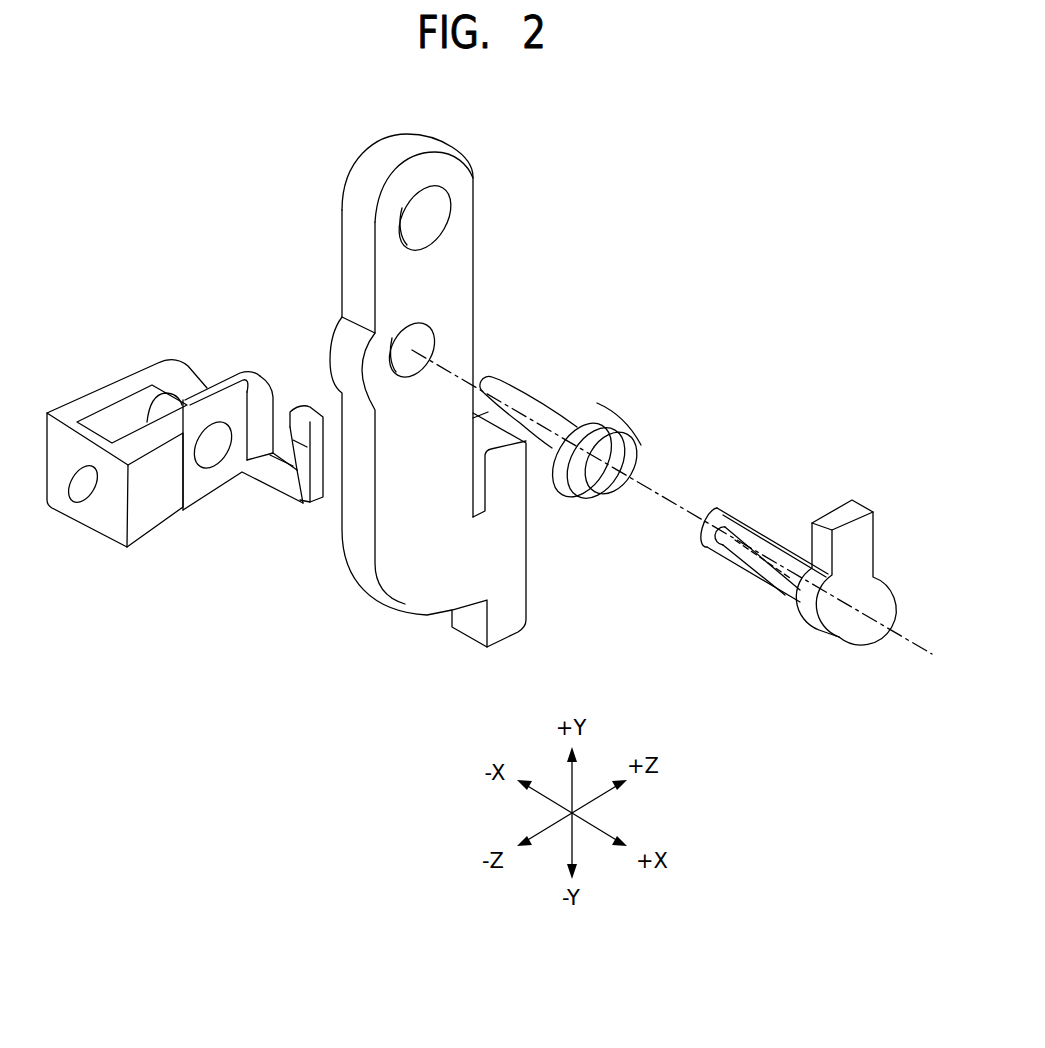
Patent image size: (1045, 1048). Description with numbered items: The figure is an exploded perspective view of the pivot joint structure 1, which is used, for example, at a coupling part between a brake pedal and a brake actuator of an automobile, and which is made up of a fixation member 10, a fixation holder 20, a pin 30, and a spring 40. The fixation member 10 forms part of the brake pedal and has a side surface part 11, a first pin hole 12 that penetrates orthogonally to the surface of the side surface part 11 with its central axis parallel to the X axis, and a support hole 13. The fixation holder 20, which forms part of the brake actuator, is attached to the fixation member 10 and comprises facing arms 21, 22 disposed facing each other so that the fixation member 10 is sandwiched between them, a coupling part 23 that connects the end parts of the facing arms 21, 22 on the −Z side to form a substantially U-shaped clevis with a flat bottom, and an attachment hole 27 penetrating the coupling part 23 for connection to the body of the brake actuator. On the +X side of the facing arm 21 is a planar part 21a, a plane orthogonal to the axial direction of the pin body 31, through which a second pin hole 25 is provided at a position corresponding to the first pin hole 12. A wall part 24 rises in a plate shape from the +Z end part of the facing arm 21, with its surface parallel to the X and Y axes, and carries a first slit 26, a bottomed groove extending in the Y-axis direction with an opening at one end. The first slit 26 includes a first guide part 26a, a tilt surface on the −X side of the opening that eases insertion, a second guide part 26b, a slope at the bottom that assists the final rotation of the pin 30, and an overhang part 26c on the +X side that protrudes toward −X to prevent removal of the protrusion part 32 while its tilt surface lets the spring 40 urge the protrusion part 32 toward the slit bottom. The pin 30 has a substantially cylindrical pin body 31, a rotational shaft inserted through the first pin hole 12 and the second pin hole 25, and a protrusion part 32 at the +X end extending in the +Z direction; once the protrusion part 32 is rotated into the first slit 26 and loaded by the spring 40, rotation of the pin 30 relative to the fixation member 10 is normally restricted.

The pivot joint structure 1 is at (631, 106).
The fixation member 10 is at (432, 377).
The side surface part 11 is at (514, 189).
The first pin hole 12 is at (410, 340).
The support hole 13 is at (420, 213).
The fixation holder 20 is at (188, 488).
The facing arm 21 is at (263, 486).
The planar part 21a is at (198, 483).
The facing arm 22 is at (150, 372).
The coupling part 23 is at (112, 530).
The wall part 24 is at (312, 497).
The second pin hole 25 is at (218, 458).
The first slit 26 is at (291, 486).
The first guide part 26a is at (268, 395).
The second guide part 26b is at (263, 473).
The overhang part 26c is at (303, 398).
The attachment hole 27 is at (80, 486).
The pin 30 is at (825, 534).
The pin body 31 is at (766, 560).
The protrusion part 32 is at (862, 532).
The spring 40 is at (560, 373).